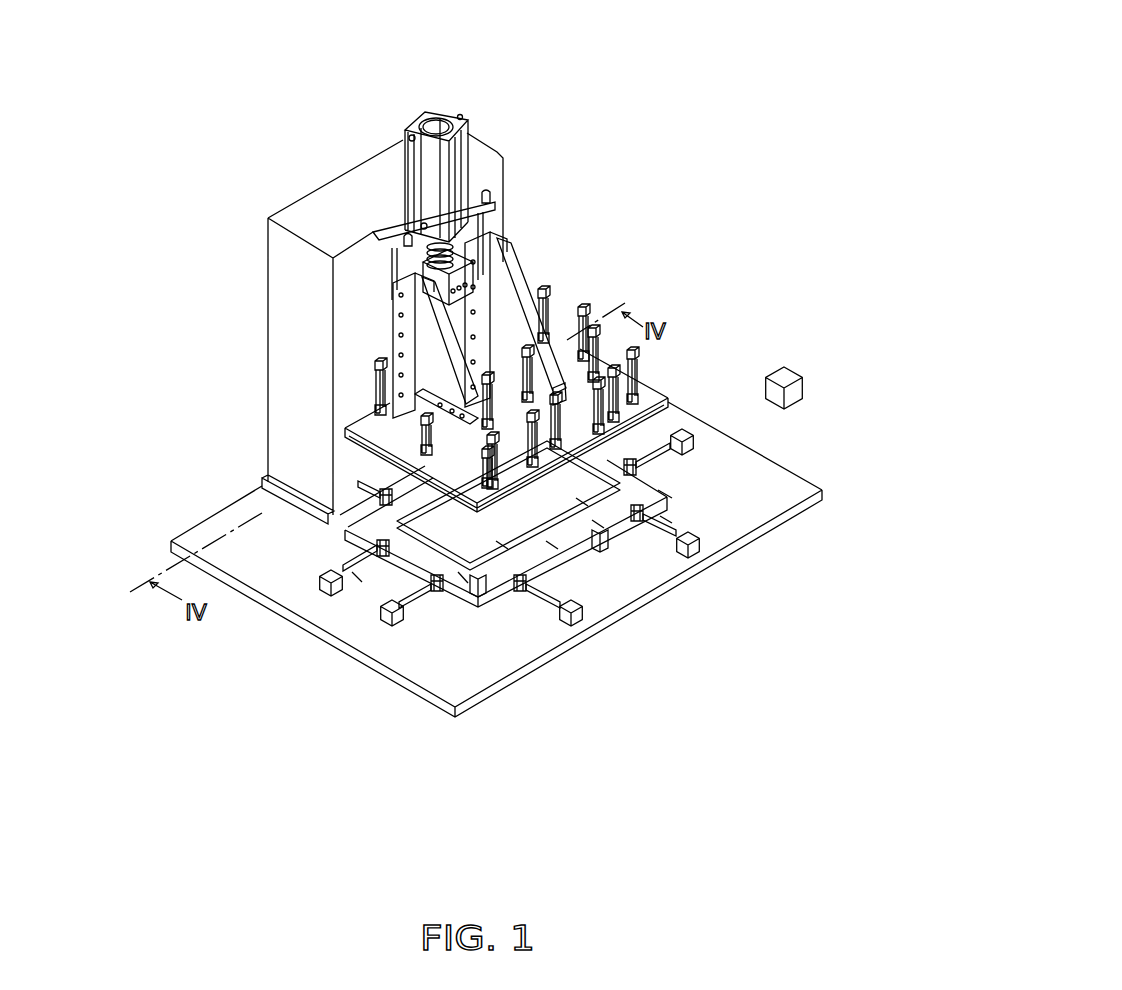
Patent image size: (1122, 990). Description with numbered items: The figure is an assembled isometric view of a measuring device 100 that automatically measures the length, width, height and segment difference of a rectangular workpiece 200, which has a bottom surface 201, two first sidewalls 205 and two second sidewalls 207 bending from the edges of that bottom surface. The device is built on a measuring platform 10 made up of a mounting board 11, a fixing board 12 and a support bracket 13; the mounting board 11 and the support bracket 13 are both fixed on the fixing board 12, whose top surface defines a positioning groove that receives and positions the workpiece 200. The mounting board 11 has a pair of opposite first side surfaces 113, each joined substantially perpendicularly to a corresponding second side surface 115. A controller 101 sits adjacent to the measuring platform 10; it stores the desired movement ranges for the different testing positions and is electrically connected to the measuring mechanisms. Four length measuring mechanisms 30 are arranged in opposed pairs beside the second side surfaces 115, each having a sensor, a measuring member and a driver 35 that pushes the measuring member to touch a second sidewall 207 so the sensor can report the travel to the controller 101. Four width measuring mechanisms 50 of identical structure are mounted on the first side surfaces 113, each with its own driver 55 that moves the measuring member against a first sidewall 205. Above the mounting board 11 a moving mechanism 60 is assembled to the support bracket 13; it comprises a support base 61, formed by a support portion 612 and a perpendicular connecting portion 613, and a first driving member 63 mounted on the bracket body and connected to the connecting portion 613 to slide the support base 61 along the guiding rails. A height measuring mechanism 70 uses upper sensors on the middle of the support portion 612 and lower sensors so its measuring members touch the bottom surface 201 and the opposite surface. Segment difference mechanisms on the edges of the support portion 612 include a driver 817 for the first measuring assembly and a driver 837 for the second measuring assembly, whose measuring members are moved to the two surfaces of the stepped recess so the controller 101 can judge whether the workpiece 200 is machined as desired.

The measuring device 100 is at (434, 54).
The measuring platform 10 is at (707, 247).
The mounting board 11 is at (706, 488).
The fixing board 12 is at (662, 430).
The support bracket 13 is at (497, 218).
The controller 101 is at (785, 380).
The first side surfaces 113 is at (665, 494).
The second side surfaces 115 is at (357, 577).
The length measuring mechanism 30 is at (420, 563).
The driver 35 is at (378, 443).
The width measuring mechanism 50 is at (665, 545).
The driver 55 is at (480, 600).
The moving mechanism 60 is at (164, 258).
The support base 61 is at (367, 328).
The support portion 612 is at (365, 420).
The connecting portion 613 is at (413, 362).
The first driving member 63 is at (417, 188).
The height measuring mechanism 70 is at (502, 545).
The workpiece 200 is at (668, 546).
The bottom surface 201 is at (552, 545).
The first sidewalls 205 is at (582, 503).
The second sidewalls 207 is at (463, 578).
The driver 817 is at (598, 525).
The driver 837 is at (667, 520).